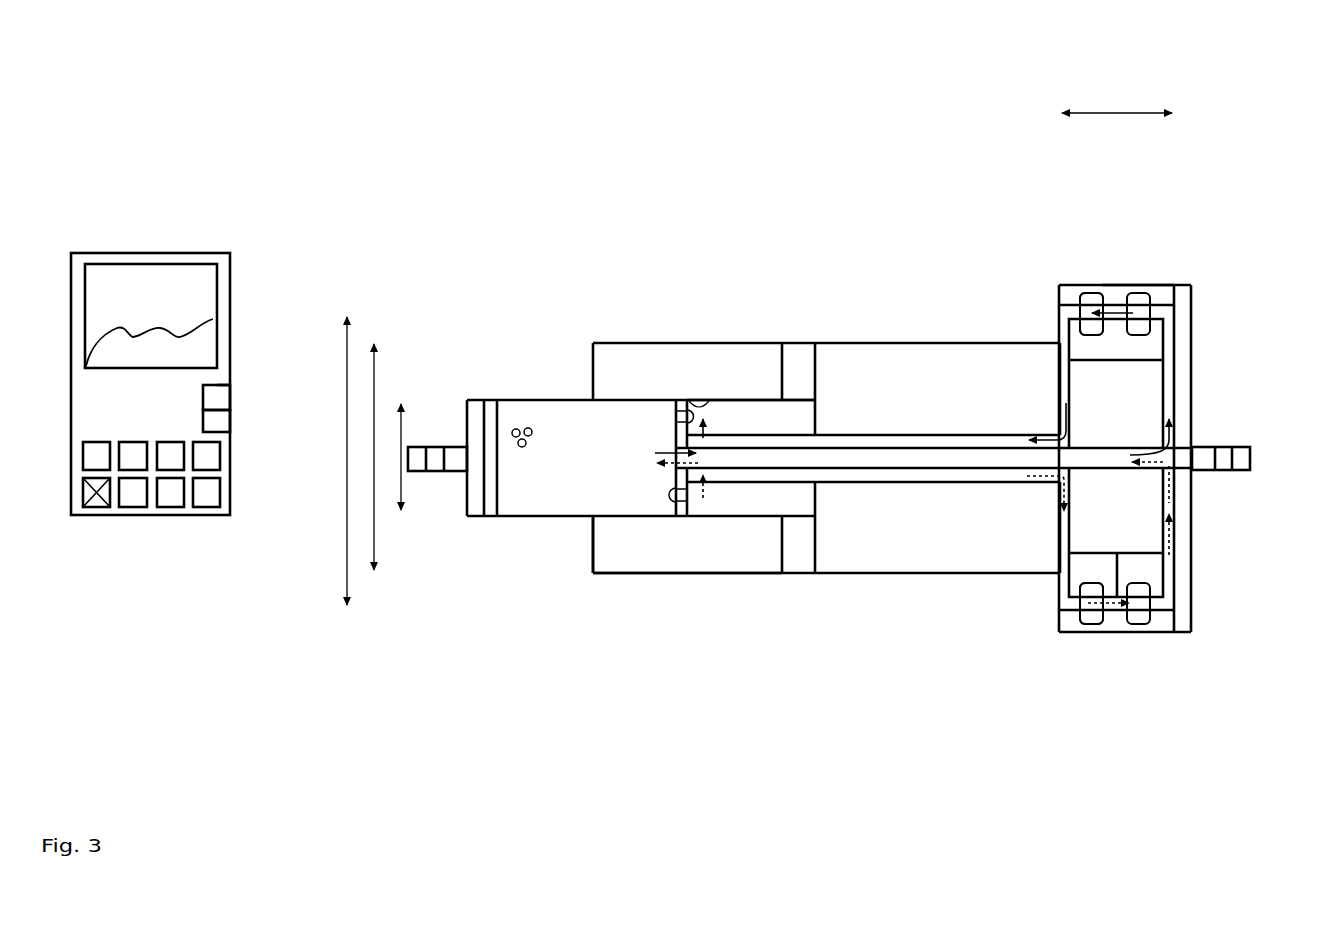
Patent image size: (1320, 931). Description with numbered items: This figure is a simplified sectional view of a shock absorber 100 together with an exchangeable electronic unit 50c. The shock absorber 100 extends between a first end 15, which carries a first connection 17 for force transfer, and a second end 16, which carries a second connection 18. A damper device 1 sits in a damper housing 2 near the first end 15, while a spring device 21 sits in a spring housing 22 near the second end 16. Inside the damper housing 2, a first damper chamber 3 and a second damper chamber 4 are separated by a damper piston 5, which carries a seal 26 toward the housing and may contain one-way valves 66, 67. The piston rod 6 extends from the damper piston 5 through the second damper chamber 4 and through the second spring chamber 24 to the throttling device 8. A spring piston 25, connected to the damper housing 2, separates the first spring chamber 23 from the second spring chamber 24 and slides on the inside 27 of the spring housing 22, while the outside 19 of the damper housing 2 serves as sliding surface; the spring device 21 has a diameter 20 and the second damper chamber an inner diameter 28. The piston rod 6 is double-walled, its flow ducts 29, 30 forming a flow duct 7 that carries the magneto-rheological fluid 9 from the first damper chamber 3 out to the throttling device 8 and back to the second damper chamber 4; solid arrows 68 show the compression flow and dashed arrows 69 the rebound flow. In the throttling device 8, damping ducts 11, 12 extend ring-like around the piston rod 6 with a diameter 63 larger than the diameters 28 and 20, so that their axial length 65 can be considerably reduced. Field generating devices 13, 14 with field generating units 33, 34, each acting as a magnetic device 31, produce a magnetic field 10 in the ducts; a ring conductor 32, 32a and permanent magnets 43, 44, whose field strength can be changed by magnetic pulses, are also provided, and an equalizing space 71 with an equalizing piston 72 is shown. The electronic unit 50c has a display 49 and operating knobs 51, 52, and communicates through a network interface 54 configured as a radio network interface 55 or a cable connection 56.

The shock absorber 100 is at (561, 153).
The damper device 1 is at (463, 393).
The damper housing 2 is at (525, 520).
The first damper chamber 3 is at (567, 405).
The second damper chamber 4 is at (748, 415).
The damper piston 5 is at (680, 400).
The piston rod 6 is at (860, 430).
The flow duct 7 is at (1002, 453).
The throttling device 8 is at (1070, 268).
The fluid 9 is at (521, 420).
The field 10 is at (1177, 297).
The damping duct 11 is at (1113, 303).
The damping duct 12 is at (1110, 602).
The field generating device 13 is at (1120, 285).
The field generating device 14 is at (1090, 638).
The first end 15 is at (425, 482).
The second end 16 is at (1250, 473).
The first connection 17 is at (417, 482).
The second connection 18 is at (1247, 440).
The outside 19 is at (558, 540).
The diameter 20 is at (375, 453).
The spring device 21 is at (602, 582).
The spring housing 22 is at (655, 580).
The first spring chamber 23 is at (720, 572).
The second spring chamber 24 is at (913, 540).
The spring piston 25 is at (797, 580).
The seal 26 is at (708, 404).
The inside 27 is at (963, 343).
The diameter 28 is at (405, 452).
The flow duct 29 is at (953, 457).
The flow duct 30 is at (902, 440).
The magnetic device 31 is at (1153, 388).
The ring conductor 32 is at (1167, 283).
The outer guide wall 32a is at (1185, 510).
The field generating unit 33 is at (1090, 285).
The field generating unit 34 is at (1157, 637).
The permanent magnet 43 is at (1102, 340).
The permanent magnet 44 is at (1152, 580).
The display 49 is at (180, 279).
The electronic unit 50c is at (92, 242).
The operating knob 51 is at (202, 513).
The operating knob 52 is at (88, 512).
The network interface 54 is at (240, 378).
The radio network interface 55 is at (218, 397).
The cable connection 56 is at (231, 421).
The diameter 63 is at (342, 450).
The axial length 65 is at (1108, 110).
The valve 66 is at (670, 496).
The valve 67 is at (674, 417).
The arrow 68 is at (662, 444).
The arrow 69 is at (663, 467).
The equalizing space 71 is at (477, 402).
The equalizing piston 72 is at (492, 407).